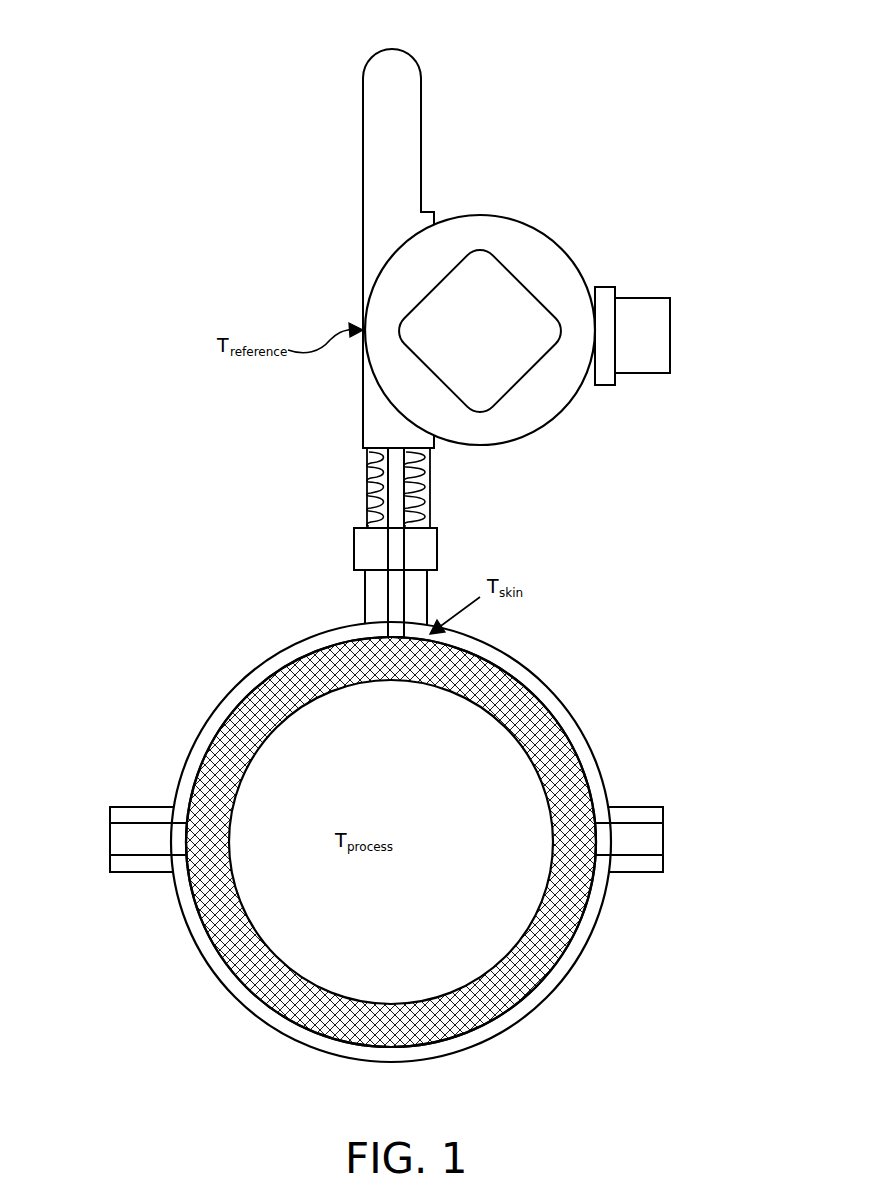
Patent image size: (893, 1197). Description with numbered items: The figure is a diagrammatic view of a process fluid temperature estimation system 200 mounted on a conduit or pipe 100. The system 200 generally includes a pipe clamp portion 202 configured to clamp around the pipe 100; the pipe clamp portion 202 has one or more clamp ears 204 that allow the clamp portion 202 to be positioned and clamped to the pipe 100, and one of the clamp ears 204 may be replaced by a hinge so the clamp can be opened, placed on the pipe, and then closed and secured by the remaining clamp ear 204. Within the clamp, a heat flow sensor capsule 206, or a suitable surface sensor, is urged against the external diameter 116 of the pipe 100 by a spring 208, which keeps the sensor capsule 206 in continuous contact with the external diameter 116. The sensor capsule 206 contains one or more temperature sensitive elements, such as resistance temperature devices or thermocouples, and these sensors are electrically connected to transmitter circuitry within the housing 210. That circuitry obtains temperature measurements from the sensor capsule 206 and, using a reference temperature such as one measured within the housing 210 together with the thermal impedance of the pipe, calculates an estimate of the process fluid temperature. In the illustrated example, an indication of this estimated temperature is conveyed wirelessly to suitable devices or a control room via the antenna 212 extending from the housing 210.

The pipe 100 is at (540, 962).
The external diameter 116 is at (488, 660).
The process fluid temperature estimation system 200 is at (548, 343).
The pipe clamp portion 202 is at (530, 663).
The clamp ears 204 is at (128, 872).
The heat flow sensor capsule 206 is at (397, 612).
The spring 208 is at (422, 480).
The housing 210 is at (572, 258).
The antenna 212 is at (422, 115).